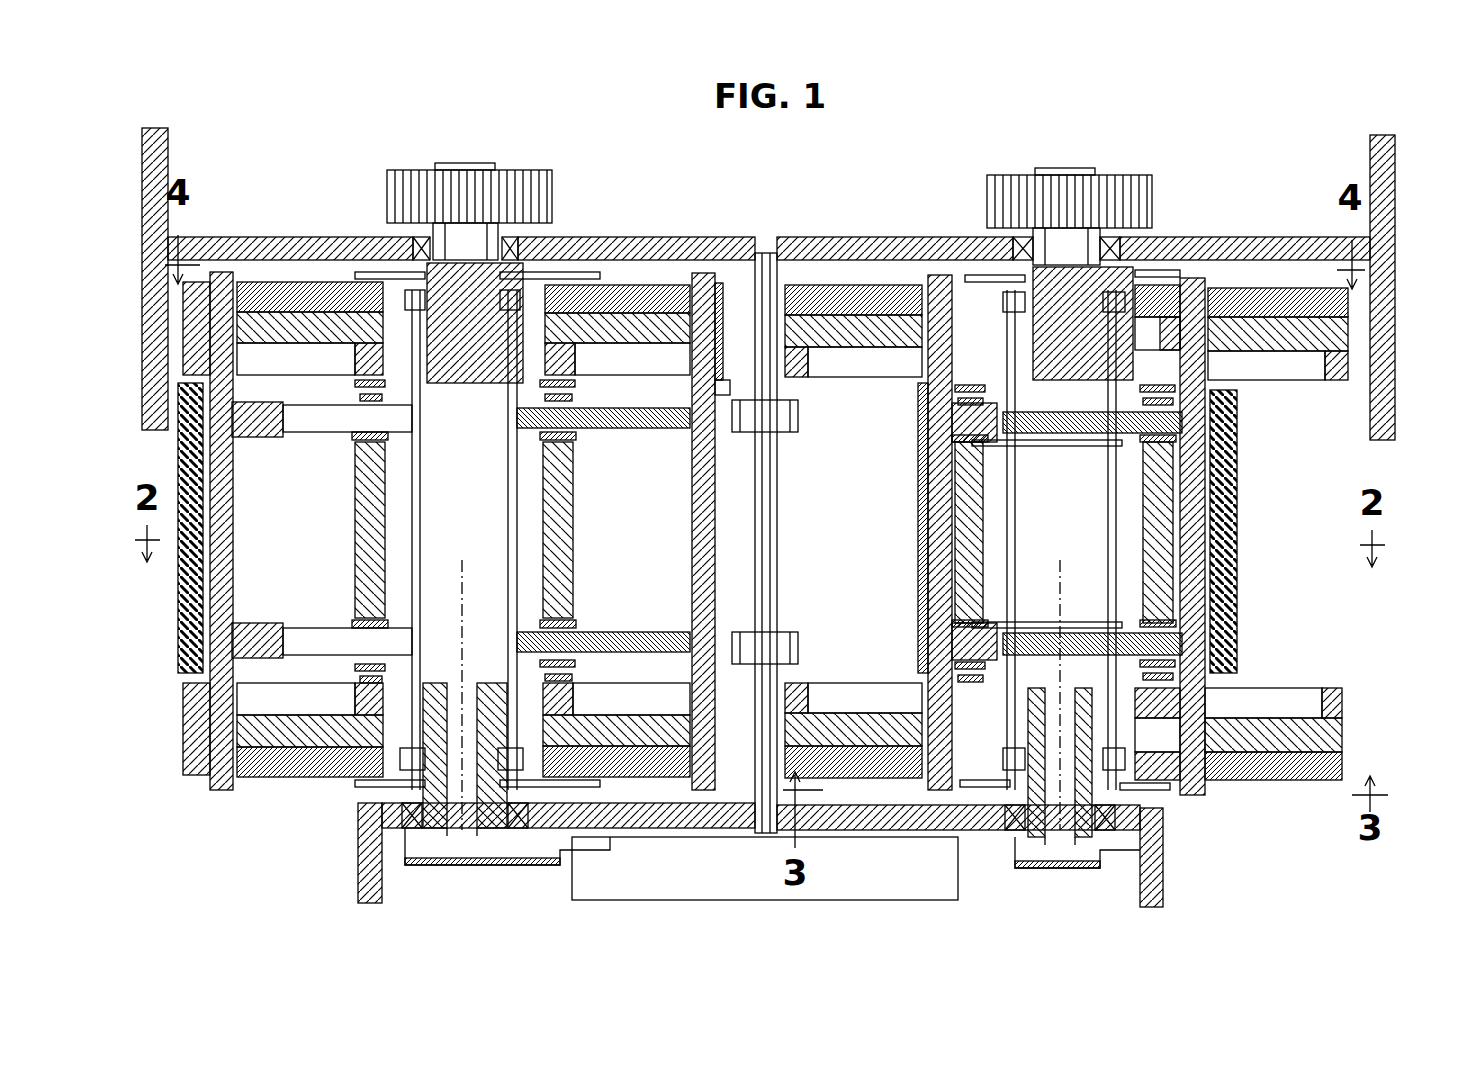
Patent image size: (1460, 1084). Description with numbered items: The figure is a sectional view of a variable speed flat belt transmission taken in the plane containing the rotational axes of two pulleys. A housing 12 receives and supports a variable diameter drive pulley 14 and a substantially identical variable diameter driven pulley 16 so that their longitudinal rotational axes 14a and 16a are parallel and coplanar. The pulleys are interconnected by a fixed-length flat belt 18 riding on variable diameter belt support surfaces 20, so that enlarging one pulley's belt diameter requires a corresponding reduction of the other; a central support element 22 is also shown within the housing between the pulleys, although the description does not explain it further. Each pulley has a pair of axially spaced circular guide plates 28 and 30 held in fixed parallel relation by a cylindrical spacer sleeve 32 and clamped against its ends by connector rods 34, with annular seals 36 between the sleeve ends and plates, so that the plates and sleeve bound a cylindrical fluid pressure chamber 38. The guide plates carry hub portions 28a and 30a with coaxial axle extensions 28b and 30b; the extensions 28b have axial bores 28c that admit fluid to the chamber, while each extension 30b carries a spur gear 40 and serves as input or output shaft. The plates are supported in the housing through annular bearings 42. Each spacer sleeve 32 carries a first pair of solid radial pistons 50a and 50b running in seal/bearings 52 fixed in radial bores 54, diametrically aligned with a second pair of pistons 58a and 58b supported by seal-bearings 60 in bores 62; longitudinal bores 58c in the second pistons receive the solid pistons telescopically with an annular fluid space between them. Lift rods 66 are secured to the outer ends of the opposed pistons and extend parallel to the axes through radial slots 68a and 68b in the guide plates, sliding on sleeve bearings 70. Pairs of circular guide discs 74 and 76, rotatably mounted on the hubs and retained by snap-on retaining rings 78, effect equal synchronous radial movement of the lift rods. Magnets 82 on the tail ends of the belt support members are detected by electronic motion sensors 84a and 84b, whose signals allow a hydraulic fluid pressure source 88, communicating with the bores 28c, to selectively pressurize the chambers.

The housing 12 is at (183, 154).
The variable diameter drive pulley 14 is at (1240, 880).
The longitudinal rotational axis 14a is at (1058, 855).
The variable diameter driven pulley 16 is at (272, 862).
The longitudinal rotational axis 16a is at (460, 850).
The flat belt 18 is at (178, 622).
The belt support surface 20 is at (180, 555).
The central support wall 22 is at (718, 480).
The guide plate 28 is at (432, 690).
The hub portion 28a is at (505, 820).
The axle extension 28b is at (432, 852).
The axial bore 28c is at (462, 870).
The guide plate 30 is at (465, 365).
The hub portion 30a is at (505, 258).
The axle extension 30b is at (462, 164).
The spacer sleeve 32 is at (355, 518).
The connector rod 34 is at (505, 545).
The annular seal 36 is at (578, 384).
The fluid pressure chamber 38 is at (758, 500).
The spur gear 40 is at (530, 176).
The annular bearing 42 is at (413, 249).
The piston 50a is at (650, 632).
The piston 50b is at (625, 430).
The annular seal/bearing 52 is at (573, 432).
The radial bore 54 is at (560, 622).
The piston 58a is at (268, 635).
The piston 58b is at (245, 435).
The longitudinal cylindrical bore 58c is at (335, 418).
The annular seal-bearing 60 is at (405, 425).
The bore 62 is at (945, 595).
The lift rod 66 is at (180, 447).
The radial slot 68a is at (290, 700).
The radial slot 68b is at (265, 358).
The sleeve bearing 70 is at (225, 275).
The guide disc 74 is at (290, 328).
The guide disc 76 is at (325, 300).
The snap-on retaining ring 78 is at (560, 278).
The magnet 82 is at (720, 400).
The electronic motion sensor 84a is at (798, 420).
The electronic motion sensor 84b is at (775, 450).
The source of fluid pressure 88 is at (612, 895).